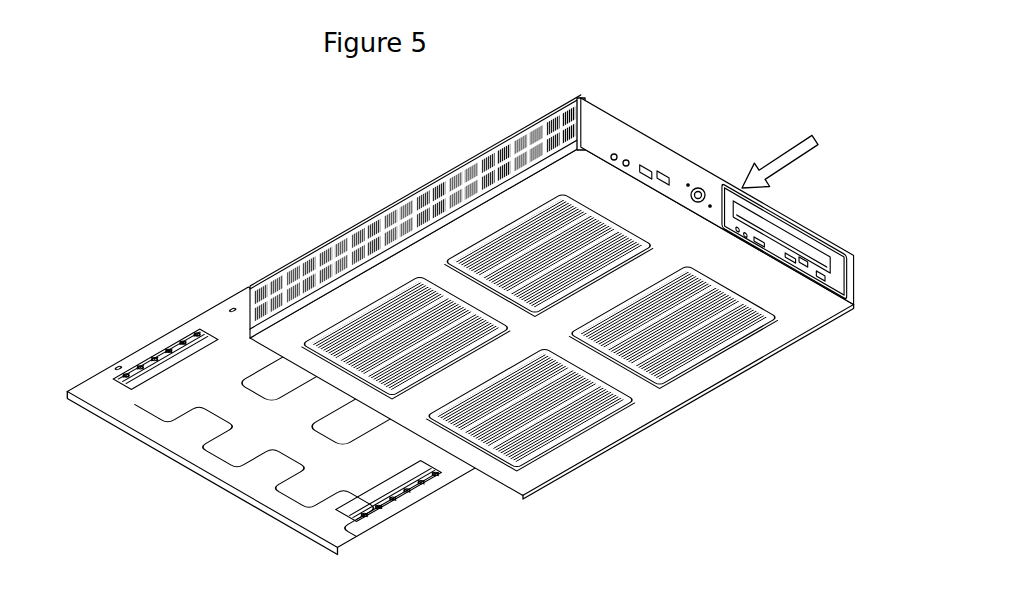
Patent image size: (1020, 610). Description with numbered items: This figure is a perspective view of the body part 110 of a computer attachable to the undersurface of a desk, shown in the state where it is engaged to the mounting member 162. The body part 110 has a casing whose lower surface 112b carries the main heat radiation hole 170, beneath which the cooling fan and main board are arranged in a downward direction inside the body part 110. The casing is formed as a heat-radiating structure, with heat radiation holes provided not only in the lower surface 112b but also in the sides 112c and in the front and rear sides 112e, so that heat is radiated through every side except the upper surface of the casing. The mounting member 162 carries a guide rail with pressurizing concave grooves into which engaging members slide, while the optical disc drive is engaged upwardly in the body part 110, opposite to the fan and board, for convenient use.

The body part 110 is at (552, 302).
The casing lower surface 112b is at (622, 415).
The side of casing 112c is at (455, 211).
The front side of casing 112e is at (717, 201).
The mounting member 162 is at (292, 430).
The heat radiation hole 170 is at (553, 417).